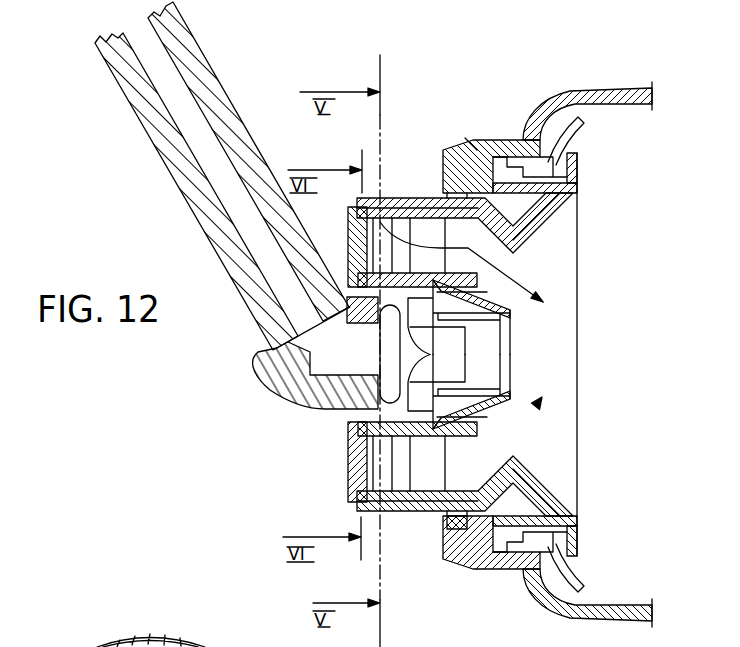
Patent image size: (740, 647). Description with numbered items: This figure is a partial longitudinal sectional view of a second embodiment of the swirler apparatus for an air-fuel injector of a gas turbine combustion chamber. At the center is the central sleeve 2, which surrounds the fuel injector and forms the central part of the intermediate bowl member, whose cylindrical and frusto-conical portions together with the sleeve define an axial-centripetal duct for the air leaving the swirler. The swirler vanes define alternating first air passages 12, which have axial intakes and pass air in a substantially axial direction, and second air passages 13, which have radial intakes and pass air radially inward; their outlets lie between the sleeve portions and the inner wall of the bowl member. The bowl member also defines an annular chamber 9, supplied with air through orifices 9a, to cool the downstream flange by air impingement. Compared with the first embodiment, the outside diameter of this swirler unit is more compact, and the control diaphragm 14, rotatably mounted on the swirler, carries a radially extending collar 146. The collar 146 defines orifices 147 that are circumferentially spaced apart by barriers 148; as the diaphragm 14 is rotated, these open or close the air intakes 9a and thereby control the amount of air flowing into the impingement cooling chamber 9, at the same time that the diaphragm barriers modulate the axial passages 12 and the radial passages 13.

The central sleeve 2 is at (350, 433).
The annular chamber 9 is at (489, 207).
The orifices 9a is at (452, 197).
The first air passages 12 is at (542, 397).
The second air passages 13 is at (392, 168).
The control diaphragm 14 is at (355, 511).
The collar 146 is at (443, 541).
The orifices 147 is at (440, 521).
The barriers 148 is at (62, 646).